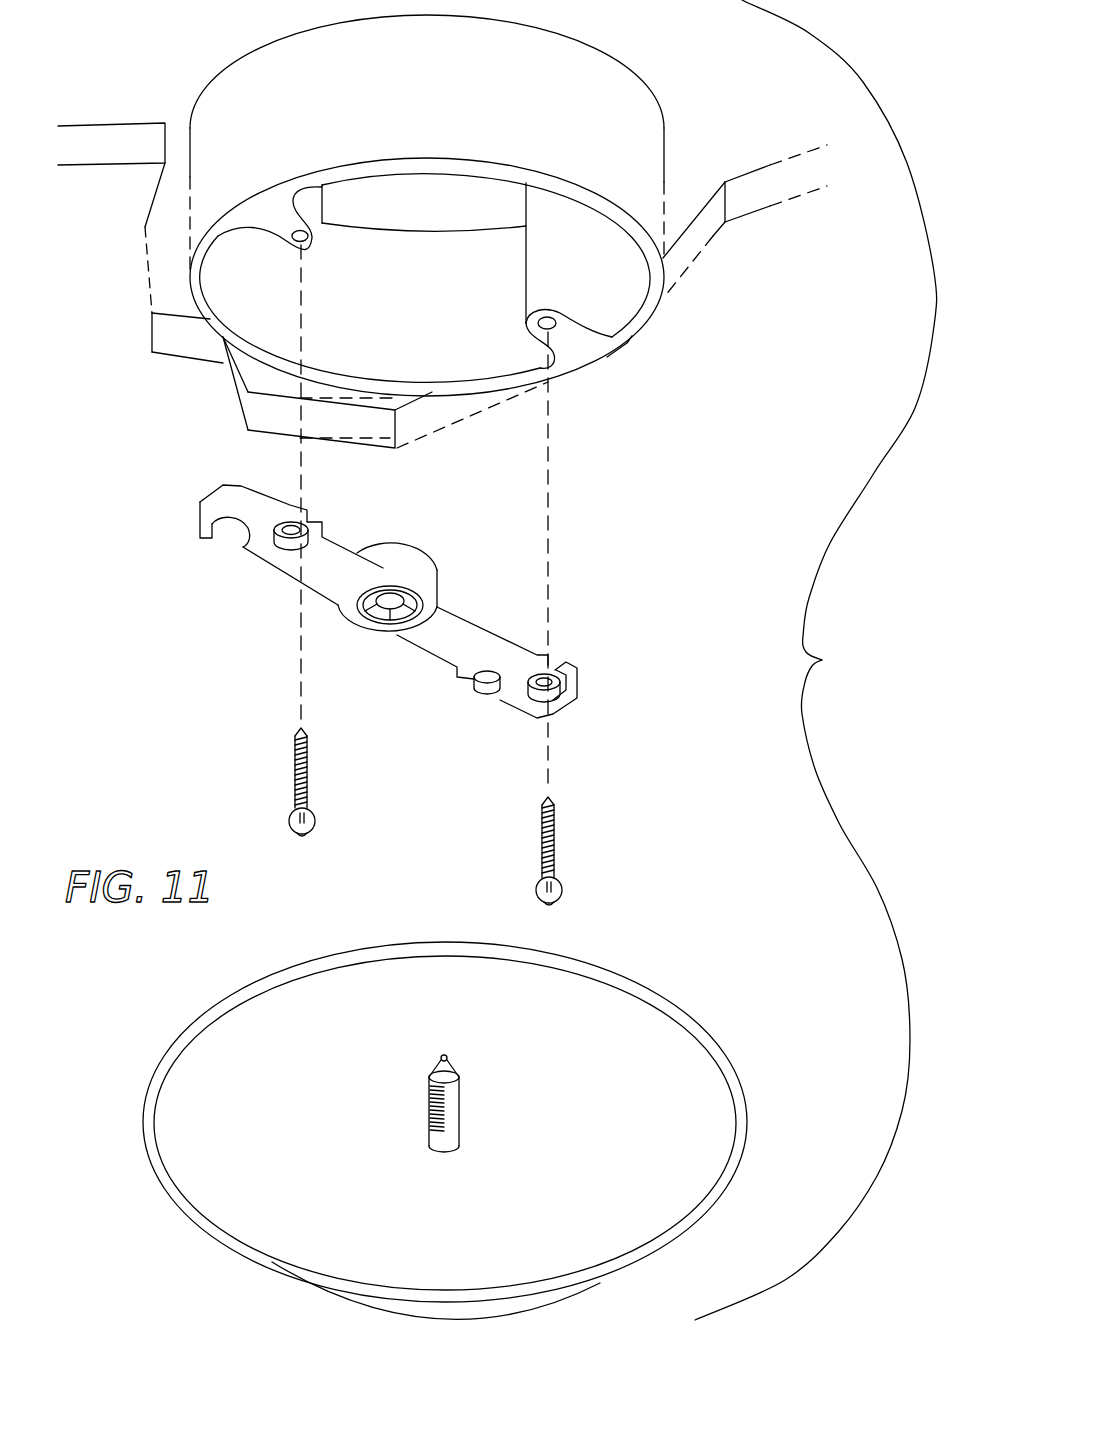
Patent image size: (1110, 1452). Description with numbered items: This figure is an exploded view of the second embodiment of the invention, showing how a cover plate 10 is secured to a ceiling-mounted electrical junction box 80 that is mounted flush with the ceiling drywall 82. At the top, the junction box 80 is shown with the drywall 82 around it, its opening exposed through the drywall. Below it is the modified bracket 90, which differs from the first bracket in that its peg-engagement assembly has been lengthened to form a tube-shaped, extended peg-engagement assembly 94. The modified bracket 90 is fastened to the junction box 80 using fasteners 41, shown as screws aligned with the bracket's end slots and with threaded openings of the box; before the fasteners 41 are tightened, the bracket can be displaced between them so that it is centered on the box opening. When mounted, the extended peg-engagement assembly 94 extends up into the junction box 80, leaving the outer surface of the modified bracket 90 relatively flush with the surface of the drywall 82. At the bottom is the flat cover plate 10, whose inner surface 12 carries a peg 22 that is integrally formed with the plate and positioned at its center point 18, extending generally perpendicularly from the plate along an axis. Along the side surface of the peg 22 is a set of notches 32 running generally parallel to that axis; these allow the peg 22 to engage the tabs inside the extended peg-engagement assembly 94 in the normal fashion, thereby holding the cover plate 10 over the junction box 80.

The cover plate 10 is at (745, 1008).
The inner surface 12 is at (549, 1215).
The center point 18 is at (441, 1056).
The peg 22 is at (441, 1086).
The notches 32 is at (430, 1106).
The fasteners 41 is at (308, 766).
The junction box 80 is at (600, 82).
The ceiling drywall 82 is at (697, 235).
The modified bracket 90 is at (388, 601).
The extended peg-engagement assembly 94 is at (407, 558).